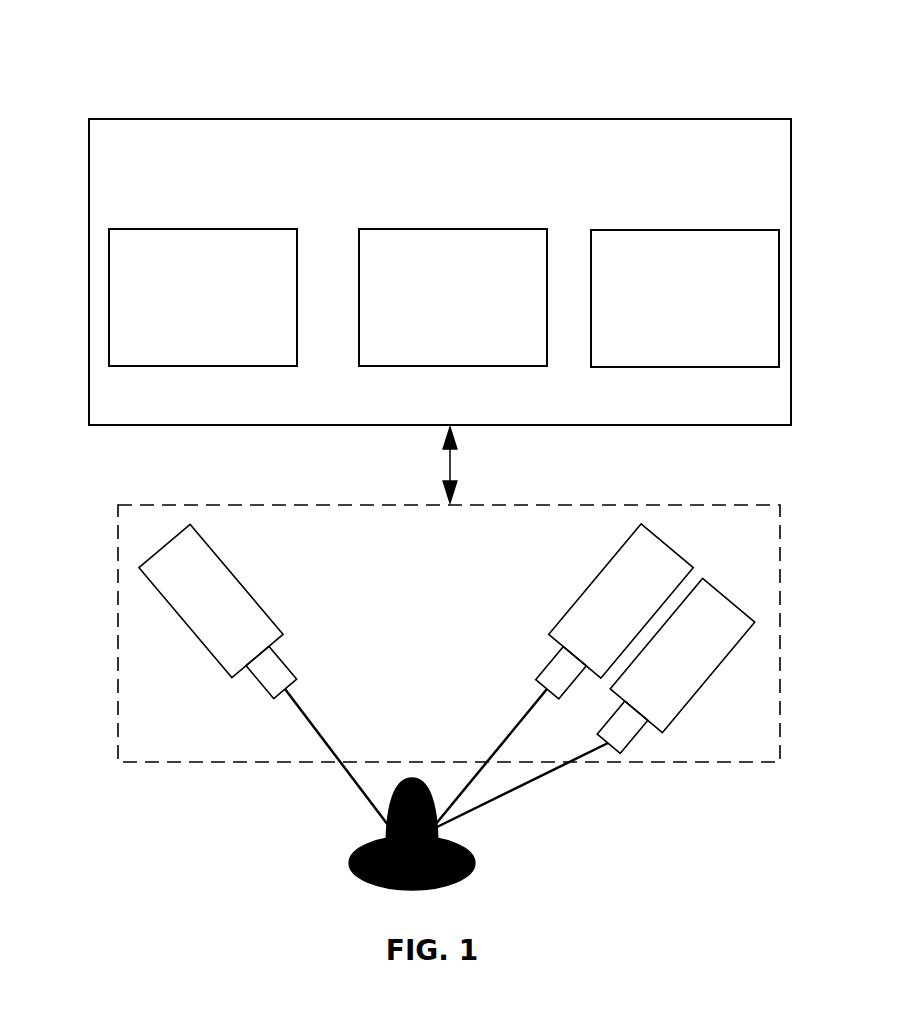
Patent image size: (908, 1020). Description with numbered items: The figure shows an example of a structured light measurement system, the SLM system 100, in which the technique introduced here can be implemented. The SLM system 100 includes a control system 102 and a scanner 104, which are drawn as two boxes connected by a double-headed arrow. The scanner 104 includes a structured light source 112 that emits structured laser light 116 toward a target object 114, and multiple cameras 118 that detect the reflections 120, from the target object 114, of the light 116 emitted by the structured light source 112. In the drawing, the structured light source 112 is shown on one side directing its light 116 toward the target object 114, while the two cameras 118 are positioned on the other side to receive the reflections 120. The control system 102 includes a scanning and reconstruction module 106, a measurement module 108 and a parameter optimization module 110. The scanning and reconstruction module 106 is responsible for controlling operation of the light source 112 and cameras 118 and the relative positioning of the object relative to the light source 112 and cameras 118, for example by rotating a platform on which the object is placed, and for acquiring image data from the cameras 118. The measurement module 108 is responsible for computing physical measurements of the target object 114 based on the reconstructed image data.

The SLM system 100 is at (798, 86).
The control system 102 is at (440, 272).
The scanner 104 is at (476, 669).
The scanning and reconstruction module 106 is at (203, 297).
The measurement module 108 is at (453, 297).
The parameter optimization module 110 is at (685, 298).
The structured light source 112 is at (258, 600).
The target object 114 is at (410, 778).
The structured laser light 116 is at (302, 707).
The cameras 118 is at (665, 543).
The reflections 120 is at (542, 775).